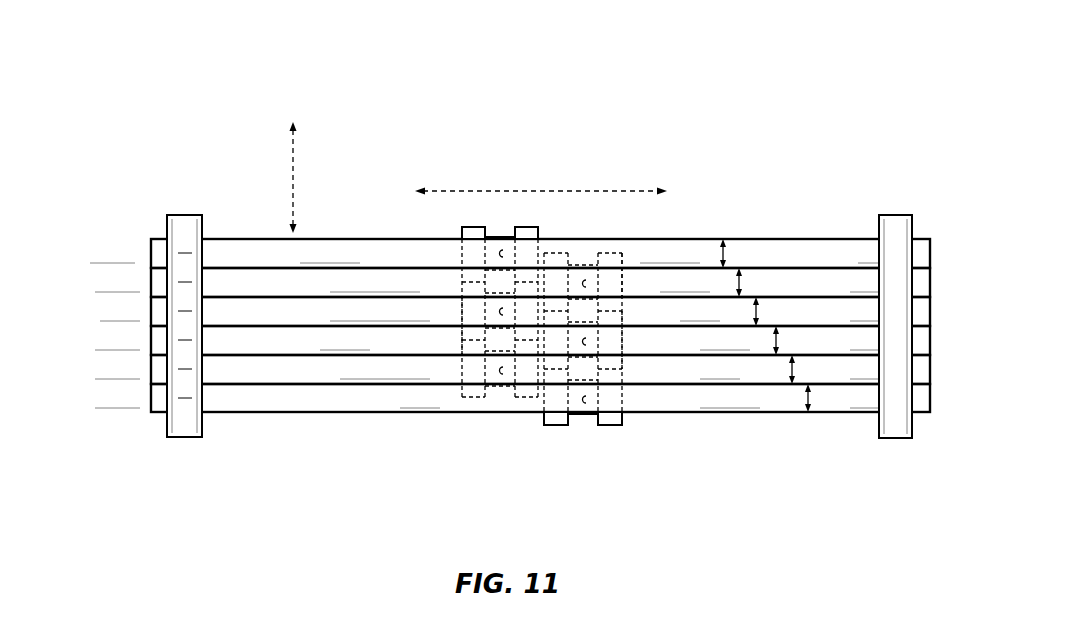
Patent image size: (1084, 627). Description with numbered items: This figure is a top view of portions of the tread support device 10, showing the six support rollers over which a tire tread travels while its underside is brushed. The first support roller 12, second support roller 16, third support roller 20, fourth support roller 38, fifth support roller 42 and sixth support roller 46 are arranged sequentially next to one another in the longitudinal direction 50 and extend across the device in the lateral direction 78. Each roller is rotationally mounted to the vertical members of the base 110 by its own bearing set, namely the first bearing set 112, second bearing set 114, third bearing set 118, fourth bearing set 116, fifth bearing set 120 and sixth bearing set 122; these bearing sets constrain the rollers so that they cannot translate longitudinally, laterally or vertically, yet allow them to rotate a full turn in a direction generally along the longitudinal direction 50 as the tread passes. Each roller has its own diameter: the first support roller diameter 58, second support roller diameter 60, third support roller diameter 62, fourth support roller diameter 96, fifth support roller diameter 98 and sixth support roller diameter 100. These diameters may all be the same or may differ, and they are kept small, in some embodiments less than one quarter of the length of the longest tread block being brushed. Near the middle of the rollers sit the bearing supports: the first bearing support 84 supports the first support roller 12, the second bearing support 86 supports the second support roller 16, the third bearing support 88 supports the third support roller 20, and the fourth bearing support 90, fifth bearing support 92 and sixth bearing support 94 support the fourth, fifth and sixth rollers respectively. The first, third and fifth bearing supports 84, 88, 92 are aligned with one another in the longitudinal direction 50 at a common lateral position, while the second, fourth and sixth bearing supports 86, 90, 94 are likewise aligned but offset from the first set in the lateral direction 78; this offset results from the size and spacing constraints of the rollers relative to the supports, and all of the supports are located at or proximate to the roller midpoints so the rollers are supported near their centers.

The tread support device 10 is at (187, 90).
The first support roller 12 is at (232, 398).
The second support roller 16 is at (269, 370).
The third support roller 20 is at (307, 342).
The fourth support roller 38 is at (345, 310).
The fifth support roller 42 is at (245, 283).
The sixth support roller 46 is at (283, 257).
The longitudinal direction 50 is at (295, 177).
The first support roller diameter 58 is at (807, 398).
The second support roller diameter 60 is at (791, 370).
The third support roller diameter 62 is at (775, 341).
The lateral direction 78 is at (542, 191).
The first bearing support 84 is at (608, 426).
The second bearing support 86 is at (473, 398).
The third bearing support 88 is at (623, 343).
The fourth bearing support 90 is at (460, 317).
The fifth bearing support 92 is at (622, 253).
The sixth bearing support 94 is at (462, 230).
The fourth support roller diameter 96 is at (757, 312).
The fifth support roller diameter 98 is at (740, 283).
The sixth support roller diameter 100 is at (745, 238).
The base 110 is at (895, 215).
The first bearing set 112 is at (183, 398).
The second bearing set 114 is at (183, 369).
The fourth bearing set 116 is at (183, 340).
The third bearing set 118 is at (183, 311).
The fifth bearing set 120 is at (183, 282).
The sixth bearing set 122 is at (183, 253).